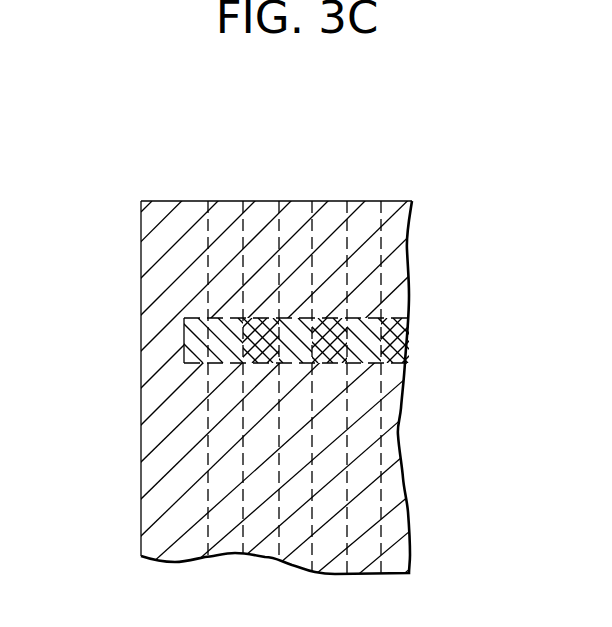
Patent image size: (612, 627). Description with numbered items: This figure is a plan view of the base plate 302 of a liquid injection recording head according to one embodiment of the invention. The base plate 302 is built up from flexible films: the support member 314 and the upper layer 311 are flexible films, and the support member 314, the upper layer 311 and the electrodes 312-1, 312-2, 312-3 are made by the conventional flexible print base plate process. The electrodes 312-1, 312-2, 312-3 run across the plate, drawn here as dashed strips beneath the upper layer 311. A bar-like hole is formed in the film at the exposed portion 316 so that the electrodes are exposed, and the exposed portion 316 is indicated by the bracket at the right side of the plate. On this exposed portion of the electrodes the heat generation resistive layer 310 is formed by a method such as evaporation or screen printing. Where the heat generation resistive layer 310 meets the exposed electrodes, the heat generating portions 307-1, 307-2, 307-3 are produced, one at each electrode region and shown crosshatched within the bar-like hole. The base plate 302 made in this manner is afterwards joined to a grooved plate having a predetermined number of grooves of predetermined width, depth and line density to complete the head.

The base plate 302 is at (414, 219).
The upper layer 311 is at (165, 217).
The support member 314 is at (140, 407).
The electrode 312-3 is at (230, 215).
The electrode 312-2 is at (303, 215).
The electrode 312-1 is at (372, 212).
The heat generation resistive layer 310 is at (185, 343).
The exposed portion of the electrodes 316 is at (413, 318).
The heat generating portion 307-3 is at (257, 317).
The heat generating portion 307-2 is at (333, 317).
The heat generating portion 307-1 is at (403, 367).